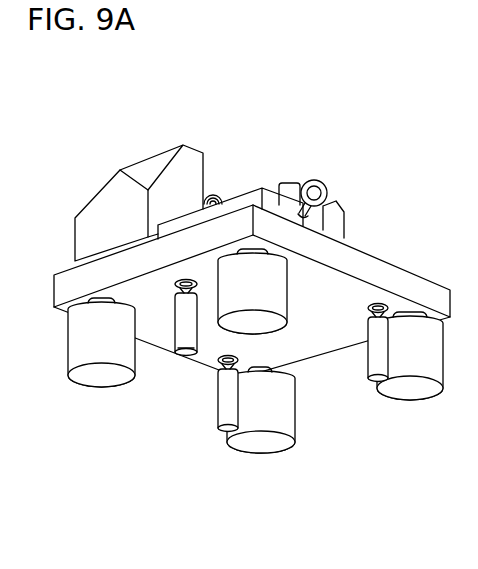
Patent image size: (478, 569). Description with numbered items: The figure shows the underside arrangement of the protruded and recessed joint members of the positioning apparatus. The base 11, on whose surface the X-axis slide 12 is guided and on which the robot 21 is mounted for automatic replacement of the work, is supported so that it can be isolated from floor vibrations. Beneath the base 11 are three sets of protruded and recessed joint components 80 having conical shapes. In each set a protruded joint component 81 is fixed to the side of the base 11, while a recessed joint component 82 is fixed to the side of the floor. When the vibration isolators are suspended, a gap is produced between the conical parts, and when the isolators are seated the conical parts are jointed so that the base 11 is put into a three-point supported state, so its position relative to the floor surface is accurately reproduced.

The base 11 is at (67, 279).
The X-axis slide 12 is at (133, 176).
The robot 21 is at (310, 179).
The protruded and recessed joint components 80 is at (299, 362).
The protruded joint component 81 is at (382, 306).
The recessed joint component 82 is at (188, 355).